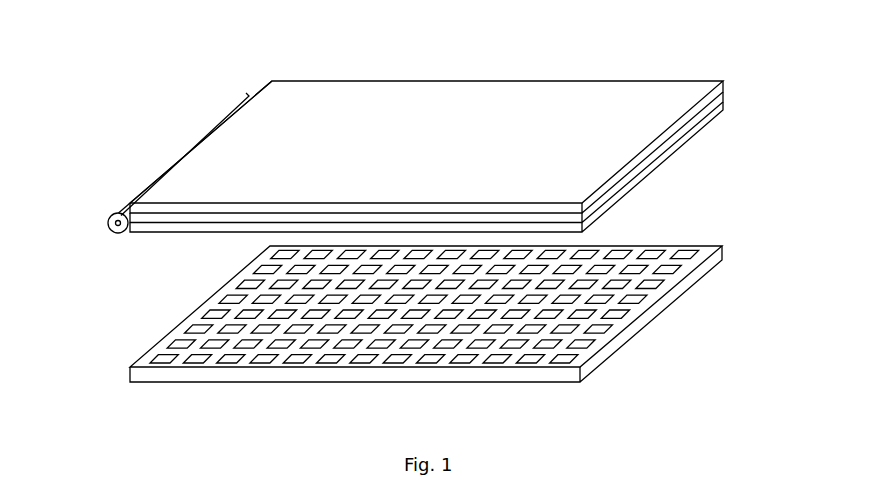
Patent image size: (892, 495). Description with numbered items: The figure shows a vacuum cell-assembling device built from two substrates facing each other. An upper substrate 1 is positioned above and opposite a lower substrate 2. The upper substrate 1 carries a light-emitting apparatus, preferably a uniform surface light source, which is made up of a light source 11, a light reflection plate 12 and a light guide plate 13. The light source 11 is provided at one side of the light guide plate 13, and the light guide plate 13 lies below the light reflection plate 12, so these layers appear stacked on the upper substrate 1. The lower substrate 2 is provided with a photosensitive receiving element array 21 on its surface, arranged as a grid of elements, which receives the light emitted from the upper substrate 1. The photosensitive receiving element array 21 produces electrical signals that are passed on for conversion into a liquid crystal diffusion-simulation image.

The upper substrate 1 is at (637, 125).
The light source 11 is at (127, 208).
The light reflection plate 12 is at (645, 163).
The light guide plate 13 is at (605, 207).
The lower substrate 2 is at (638, 325).
The photosensitive receiving element array 21 is at (663, 270).